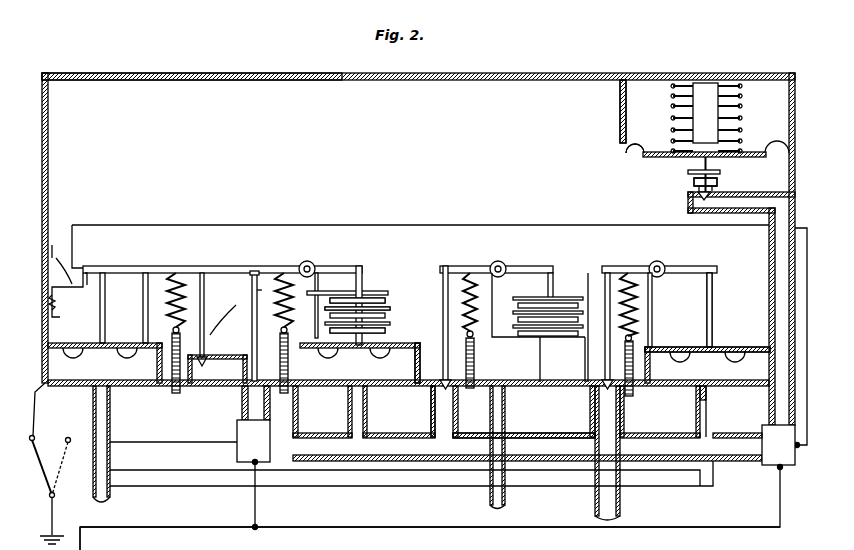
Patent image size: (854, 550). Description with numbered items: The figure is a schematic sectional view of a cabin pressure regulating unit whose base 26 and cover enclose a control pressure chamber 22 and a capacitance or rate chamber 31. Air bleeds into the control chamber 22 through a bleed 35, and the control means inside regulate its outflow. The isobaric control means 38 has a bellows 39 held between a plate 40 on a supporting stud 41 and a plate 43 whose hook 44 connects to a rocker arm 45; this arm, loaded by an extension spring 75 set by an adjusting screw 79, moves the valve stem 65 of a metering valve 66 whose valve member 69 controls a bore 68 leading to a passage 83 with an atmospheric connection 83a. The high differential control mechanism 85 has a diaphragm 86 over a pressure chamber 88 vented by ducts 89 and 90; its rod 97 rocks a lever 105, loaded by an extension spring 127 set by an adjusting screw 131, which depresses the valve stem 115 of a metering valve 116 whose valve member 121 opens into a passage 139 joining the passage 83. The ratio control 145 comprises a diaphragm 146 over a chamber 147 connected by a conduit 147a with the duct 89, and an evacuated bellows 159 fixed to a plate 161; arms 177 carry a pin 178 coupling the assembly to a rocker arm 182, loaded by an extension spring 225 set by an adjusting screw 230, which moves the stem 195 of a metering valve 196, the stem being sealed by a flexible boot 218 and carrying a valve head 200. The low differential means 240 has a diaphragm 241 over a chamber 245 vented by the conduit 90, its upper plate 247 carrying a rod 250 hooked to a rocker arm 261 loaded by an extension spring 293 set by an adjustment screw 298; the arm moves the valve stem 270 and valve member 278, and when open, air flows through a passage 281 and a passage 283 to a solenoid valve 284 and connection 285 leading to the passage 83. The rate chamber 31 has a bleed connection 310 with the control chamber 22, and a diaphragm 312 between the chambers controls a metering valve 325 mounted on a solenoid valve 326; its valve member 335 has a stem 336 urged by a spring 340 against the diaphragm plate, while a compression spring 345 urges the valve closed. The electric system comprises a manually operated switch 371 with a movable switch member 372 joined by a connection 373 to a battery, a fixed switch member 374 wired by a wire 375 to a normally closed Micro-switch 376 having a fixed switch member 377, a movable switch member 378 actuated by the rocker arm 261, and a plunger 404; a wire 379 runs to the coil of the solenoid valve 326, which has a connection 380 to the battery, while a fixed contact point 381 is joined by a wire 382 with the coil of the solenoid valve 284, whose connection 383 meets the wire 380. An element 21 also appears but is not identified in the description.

The control pressure chamber 22 is at (352, 171).
The bleed 35 is at (339, 81).
The capacitance or rate chamber 31 is at (762, 95).
The bleed connection 310 is at (621, 111).
The compression spring 345 is at (742, 110).
The diaphragm 312 is at (638, 157).
The stem 336 is at (722, 172).
The spring 340 is at (722, 183).
The metering valve 325 is at (692, 184).
The movable valve member 335 is at (700, 196).
The wire 379 is at (403, 205).
The rocker arm 261 is at (118, 261).
The movable switch member 378 is at (72, 284).
The movable plunger 404 is at (87, 300).
The fixed switch member 377 is at (56, 258).
The Micro-switch 376 is at (52, 246).
The rod 250 is at (99, 291).
The flexible diaphragm 241 is at (148, 348).
The chamber 245 is at (105, 363).
The low differential means 240 is at (180, 265).
The extension spring 293 is at (226, 256).
The valve stem 270 is at (206, 326).
The movable valve member 278 is at (205, 354).
The flexible boot 218 is at (250, 325).
The metering valve 196 is at (249, 275).
The stem 195 is at (258, 291).
The adjustment screw 298 is at (246, 304).
The extension spring 225 is at (284, 270).
The passage 281 is at (217, 369).
The rocker arm 182 is at (324, 258).
The upstanding arms 177 is at (356, 289).
The pin 178 is at (360, 266).
The ratio control 145 is at (387, 287).
The plate 161 is at (388, 300).
The evacuated bellows 159 is at (391, 312).
The diaphragm 146 is at (385, 335).
The chamber 147 is at (368, 375).
The metering valve 66 is at (434, 350).
The movable valve stem 65 is at (443, 288).
The valve member 69 is at (441, 379).
The rocker arm 45 is at (506, 262).
The extension spring 75 is at (479, 334).
The adjusting screw 79 is at (476, 370).
The plate 40 is at (526, 341).
The isobaric control means 38 is at (551, 291).
The hook 44 is at (538, 292).
The plate 43 is at (580, 305).
The metering valve 116 is at (588, 352).
The bellows 39 is at (582, 337).
The valve member 121 is at (590, 378).
The valve stem 115 is at (598, 280).
The rocker arm 105 is at (700, 246).
The extension spring 127 is at (640, 306).
The rod 97 is at (707, 319).
The high differential control mechanism 85 is at (718, 293).
The flexible diaphragm 86 is at (730, 349).
The pressure chamber 88 is at (718, 374).
The duct 90 is at (93, 424).
The wire 375 is at (35, 400).
The fixed contact point 381 is at (74, 430).
The movable switch member 372 is at (34, 452).
The fixed switch member 374 is at (62, 462).
The manually operated switch 371 is at (48, 493).
The connection 373 is at (52, 528).
The wire 382 is at (190, 443).
The valve head 200 is at (241, 400).
The solenoid valve 284 is at (266, 449).
The passage 283 is at (292, 412).
The adjusting screw 230 is at (350, 400).
The conduit 147a is at (350, 416).
The connection 285 is at (370, 446).
The bore 68 is at (437, 398).
The passage 83 is at (489, 470).
The base 26 is at (538, 388).
The wall 21 is at (510, 424).
The supporting stud 41 is at (552, 388).
The atmospheric connection 83a is at (594, 503).
The adjusting screw 131 is at (634, 396).
The passage 139 is at (625, 432).
The duct 89 is at (375, 480).
The solenoid valve 326 is at (790, 453).
The connection 380 is at (780, 486).
The connection 383 is at (304, 512).
The plate 247 is at (172, 538).